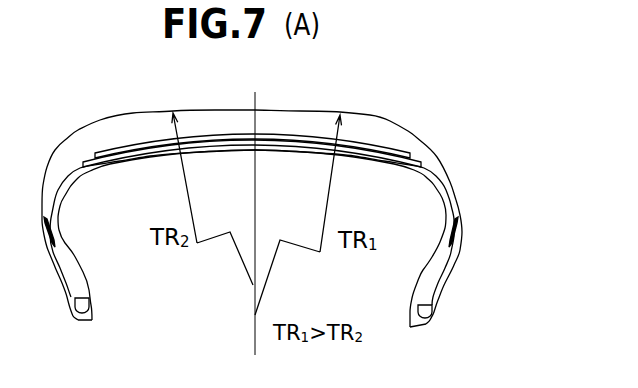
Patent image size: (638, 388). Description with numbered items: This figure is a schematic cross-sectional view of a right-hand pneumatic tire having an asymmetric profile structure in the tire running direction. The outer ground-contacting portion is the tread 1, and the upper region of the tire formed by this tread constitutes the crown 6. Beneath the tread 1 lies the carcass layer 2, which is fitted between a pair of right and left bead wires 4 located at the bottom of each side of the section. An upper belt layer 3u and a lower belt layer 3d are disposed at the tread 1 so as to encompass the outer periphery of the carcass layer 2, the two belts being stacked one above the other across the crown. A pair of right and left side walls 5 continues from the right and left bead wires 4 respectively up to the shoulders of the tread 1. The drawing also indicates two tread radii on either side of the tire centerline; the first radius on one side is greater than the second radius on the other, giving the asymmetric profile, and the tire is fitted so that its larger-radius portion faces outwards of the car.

The tread 1 is at (293, 122).
The carcass layer 2 is at (433, 276).
The upper belt layer 3u is at (408, 150).
The lower belt layer 3d is at (420, 157).
The bead wire 4 is at (423, 312).
The side wall 5 is at (462, 233).
The crown 6 is at (363, 103).